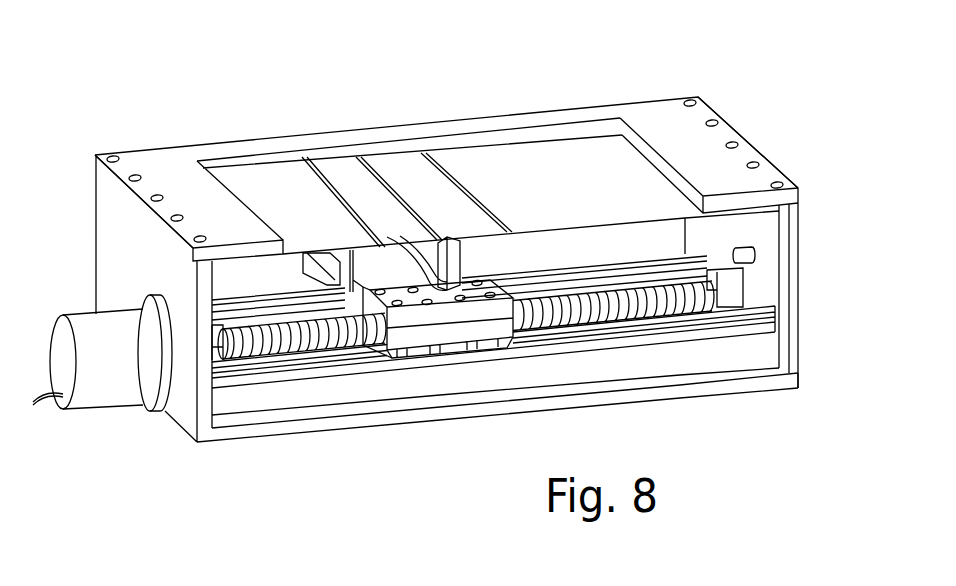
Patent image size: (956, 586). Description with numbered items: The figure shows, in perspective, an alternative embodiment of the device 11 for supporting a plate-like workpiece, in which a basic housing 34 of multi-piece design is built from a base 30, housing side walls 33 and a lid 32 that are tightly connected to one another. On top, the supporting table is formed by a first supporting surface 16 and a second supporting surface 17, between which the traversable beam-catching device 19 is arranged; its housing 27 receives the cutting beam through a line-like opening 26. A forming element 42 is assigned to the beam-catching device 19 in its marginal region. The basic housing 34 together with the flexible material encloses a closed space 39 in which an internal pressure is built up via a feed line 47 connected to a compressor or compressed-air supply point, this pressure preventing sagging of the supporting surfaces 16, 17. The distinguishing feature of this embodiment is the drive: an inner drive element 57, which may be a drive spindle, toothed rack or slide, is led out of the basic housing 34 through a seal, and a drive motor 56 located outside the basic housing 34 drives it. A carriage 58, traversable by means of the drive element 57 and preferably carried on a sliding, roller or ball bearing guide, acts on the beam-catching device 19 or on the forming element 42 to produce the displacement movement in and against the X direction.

The device 11 is at (746, 131).
The first supporting surface 16 is at (527, 170).
The second supporting surface 17 is at (233, 182).
The beam-catching device 19 is at (406, 271).
The line-like opening 26 is at (394, 177).
The housing 27 is at (432, 270).
The base 30 is at (763, 384).
The lid 32 is at (657, 106).
The housing side walls 33 is at (793, 353).
The basic housing 34 is at (790, 395).
The closed space 39 is at (617, 257).
The forming element 42 is at (377, 262).
The feed line 47 is at (756, 255).
The drive motor 56 is at (100, 386).
The drive element 57 is at (253, 328).
The carriage 58 is at (428, 334).